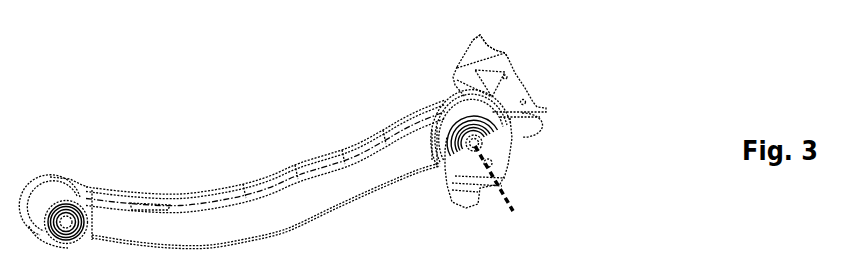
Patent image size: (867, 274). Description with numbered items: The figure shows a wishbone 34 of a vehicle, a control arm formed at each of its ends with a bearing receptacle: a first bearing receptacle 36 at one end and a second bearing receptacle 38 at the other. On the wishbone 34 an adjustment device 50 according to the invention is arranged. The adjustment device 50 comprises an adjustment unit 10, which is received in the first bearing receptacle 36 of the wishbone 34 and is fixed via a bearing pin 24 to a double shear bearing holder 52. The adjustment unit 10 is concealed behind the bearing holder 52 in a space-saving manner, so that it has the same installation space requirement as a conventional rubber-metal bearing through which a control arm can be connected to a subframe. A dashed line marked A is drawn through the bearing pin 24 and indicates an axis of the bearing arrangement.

The adjustment unit 10 is at (433, 108).
The bearing pin 24 is at (482, 140).
The wishbone 34 is at (210, 238).
The first bearing receptacle 36 is at (440, 131).
The second bearing receptacle 38 is at (65, 198).
The adjustment device 50 is at (537, 72).
The double shear bearing holder 52 is at (432, 58).
The axis A is at (500, 193).